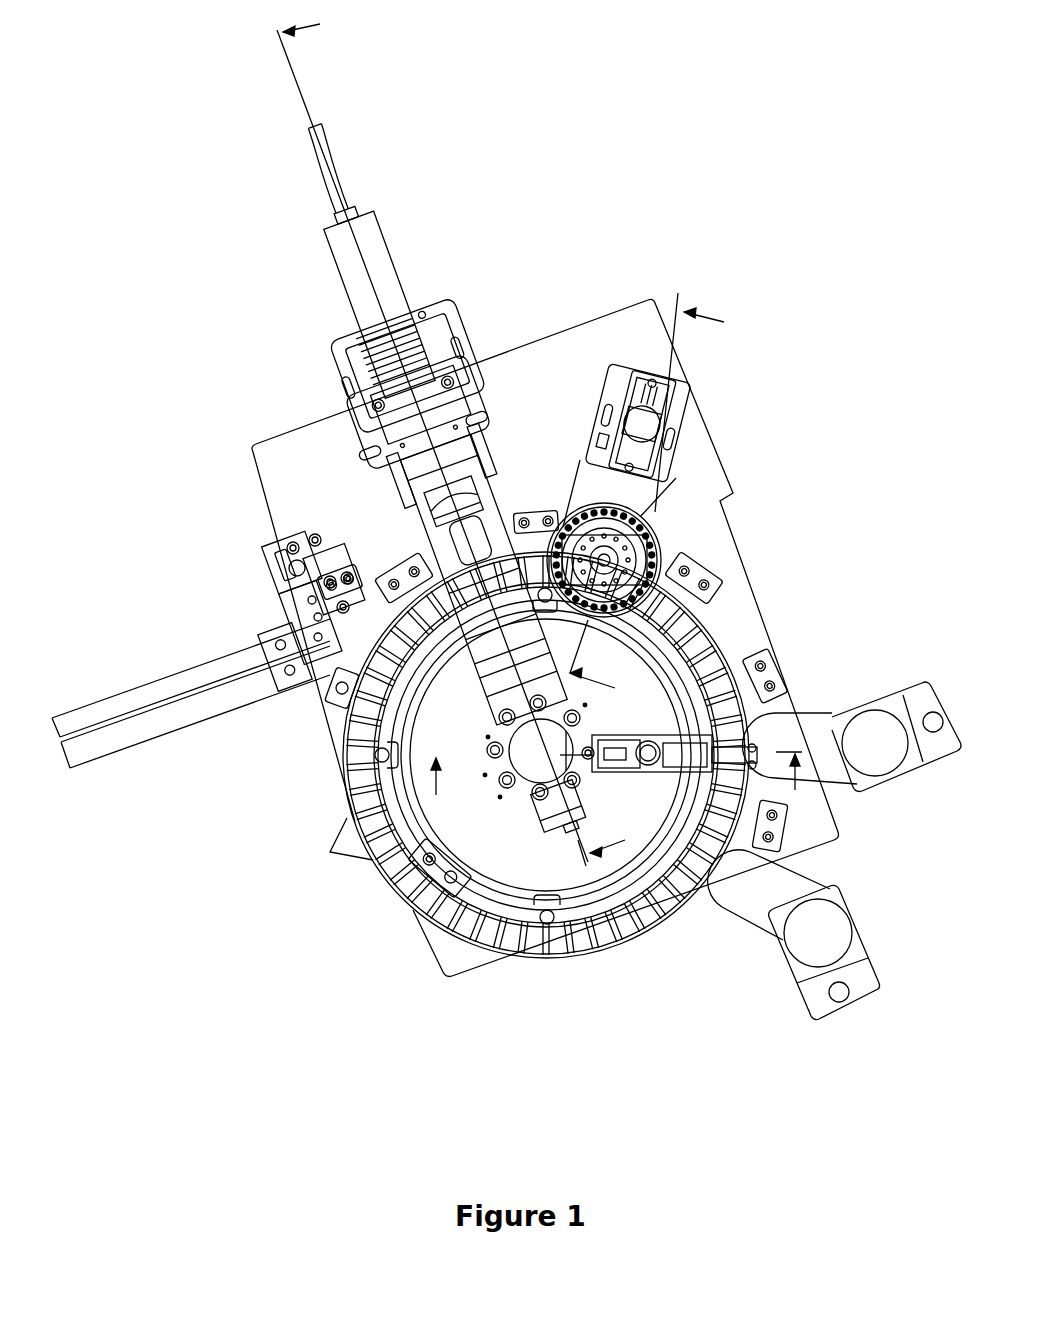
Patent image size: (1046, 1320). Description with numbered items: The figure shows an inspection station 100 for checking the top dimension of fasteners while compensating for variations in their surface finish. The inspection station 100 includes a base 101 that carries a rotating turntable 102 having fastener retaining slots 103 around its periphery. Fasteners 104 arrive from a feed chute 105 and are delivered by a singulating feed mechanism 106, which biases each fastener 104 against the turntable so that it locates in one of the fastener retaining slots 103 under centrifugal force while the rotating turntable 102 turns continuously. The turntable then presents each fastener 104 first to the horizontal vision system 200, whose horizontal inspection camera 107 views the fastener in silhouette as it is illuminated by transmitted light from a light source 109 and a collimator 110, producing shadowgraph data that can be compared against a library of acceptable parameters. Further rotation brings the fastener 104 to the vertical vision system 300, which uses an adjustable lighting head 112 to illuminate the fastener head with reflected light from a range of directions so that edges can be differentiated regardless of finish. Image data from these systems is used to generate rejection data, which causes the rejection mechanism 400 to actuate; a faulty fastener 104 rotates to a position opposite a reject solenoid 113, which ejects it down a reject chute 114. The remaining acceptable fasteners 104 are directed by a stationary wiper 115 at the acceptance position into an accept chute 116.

The inspection station 100 is at (276, 412).
The base 101 is at (270, 528).
The rotating turntable 102 is at (345, 758).
The fastener retaining slots 103 is at (330, 853).
The fasteners 104 is at (740, 650).
The feed chute 105 is at (178, 687).
The singulating feed mechanism 106 is at (367, 556).
The horizontal inspection camera 107 is at (379, 304).
The light source 109 is at (560, 810).
The collimator 110 is at (483, 579).
The adjustable lighting head 112 is at (647, 513).
The reject solenoid 113 is at (660, 767).
The reject chute 114 is at (805, 703).
The stationary wiper 115 is at (762, 860).
The accept chute 116 is at (740, 917).
The horizontal vision system 200 is at (384, 213).
The vertical vision system 300 is at (601, 378).
The rejection mechanism 400 is at (672, 716).